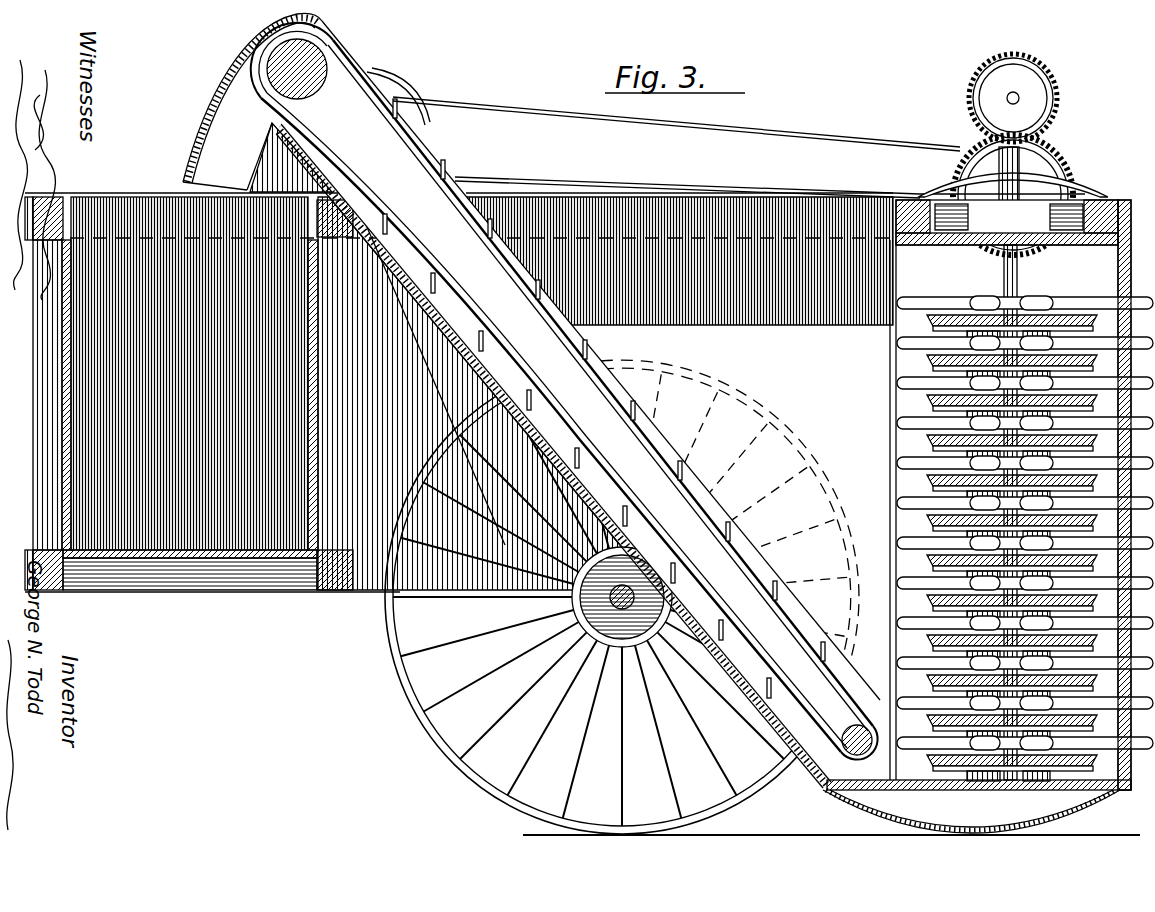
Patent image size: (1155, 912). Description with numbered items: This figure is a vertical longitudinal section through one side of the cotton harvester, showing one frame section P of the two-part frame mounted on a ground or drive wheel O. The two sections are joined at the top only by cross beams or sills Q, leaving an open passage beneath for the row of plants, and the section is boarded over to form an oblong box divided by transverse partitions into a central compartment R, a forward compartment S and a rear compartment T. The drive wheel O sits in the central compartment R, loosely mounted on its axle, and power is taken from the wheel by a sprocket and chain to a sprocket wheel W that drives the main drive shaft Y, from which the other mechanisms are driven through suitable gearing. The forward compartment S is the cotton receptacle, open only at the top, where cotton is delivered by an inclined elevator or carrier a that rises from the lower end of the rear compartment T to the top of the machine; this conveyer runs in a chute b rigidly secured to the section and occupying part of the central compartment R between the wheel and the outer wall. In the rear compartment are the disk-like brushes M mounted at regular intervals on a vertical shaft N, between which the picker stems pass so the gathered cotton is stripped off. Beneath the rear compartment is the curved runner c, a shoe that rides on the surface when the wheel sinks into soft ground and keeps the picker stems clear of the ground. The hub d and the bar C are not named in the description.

The cotton receptacle s is at (150, 200).
The cross beams or sills Q is at (36, 222).
The frame section P is at (679, 259).
The main drive shaft Y is at (437, 370).
The ground or drive wheel o is at (410, 690).
The wheel hub d is at (616, 627).
The passage or chute b is at (600, 370).
The elevator or carrier a is at (556, 338).
The sprocket wheel W is at (405, 100).
The vertical shaft N is at (1010, 195).
The rear compartment T is at (890, 342).
The central compartment R is at (965, 718).
The disk-like brushes M is at (935, 287).
The bottom bar C is at (1000, 791).
The runner c is at (971, 811).